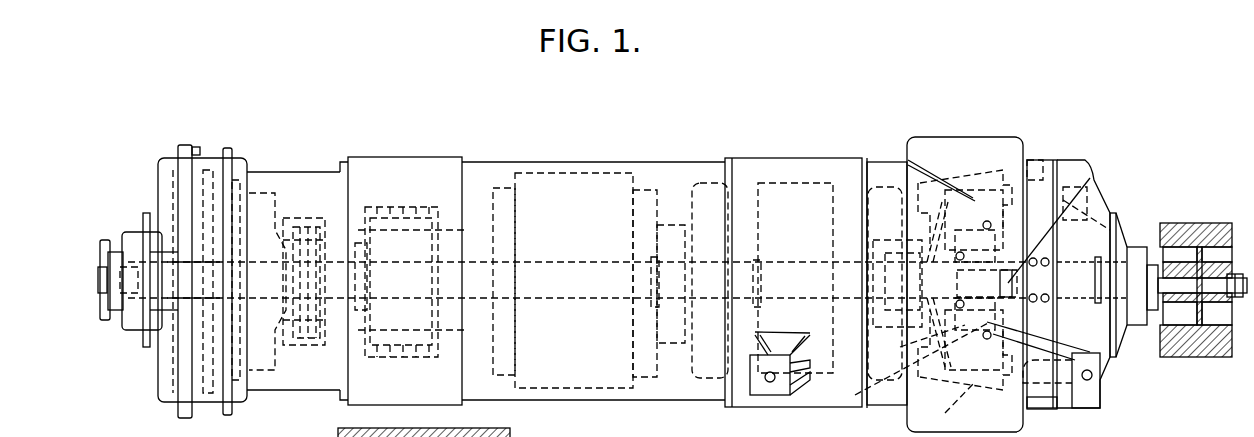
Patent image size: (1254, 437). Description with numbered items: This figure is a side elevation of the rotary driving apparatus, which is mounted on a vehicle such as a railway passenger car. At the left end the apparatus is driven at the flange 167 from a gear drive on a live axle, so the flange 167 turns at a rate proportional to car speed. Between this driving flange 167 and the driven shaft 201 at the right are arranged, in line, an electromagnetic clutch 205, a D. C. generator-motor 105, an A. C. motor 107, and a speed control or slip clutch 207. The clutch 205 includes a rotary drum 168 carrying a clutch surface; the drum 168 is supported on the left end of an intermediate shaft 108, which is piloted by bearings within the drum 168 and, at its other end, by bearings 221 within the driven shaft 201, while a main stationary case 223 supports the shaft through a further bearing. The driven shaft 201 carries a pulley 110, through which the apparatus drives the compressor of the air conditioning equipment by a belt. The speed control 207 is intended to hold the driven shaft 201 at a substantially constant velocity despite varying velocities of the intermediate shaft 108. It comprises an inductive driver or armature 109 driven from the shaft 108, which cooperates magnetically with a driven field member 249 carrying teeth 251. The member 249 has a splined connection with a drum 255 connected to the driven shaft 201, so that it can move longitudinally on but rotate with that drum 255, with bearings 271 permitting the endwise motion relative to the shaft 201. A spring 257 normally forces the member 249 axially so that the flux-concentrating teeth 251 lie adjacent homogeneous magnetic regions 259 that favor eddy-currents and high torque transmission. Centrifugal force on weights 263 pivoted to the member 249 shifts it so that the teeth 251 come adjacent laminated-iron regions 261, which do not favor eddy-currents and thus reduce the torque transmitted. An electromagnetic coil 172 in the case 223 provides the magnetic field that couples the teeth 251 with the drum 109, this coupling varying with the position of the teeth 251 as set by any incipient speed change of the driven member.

The D. C. generator-motor 105 is at (587, 160).
The A. C. motor 107 is at (780, 152).
The intermediate shaft 108 is at (537, 263).
The inductive driver or armature 109 is at (935, 240).
The pulley 110 is at (1194, 223).
The flange 167 is at (105, 240).
The drum 168 is at (173, 168).
The electromagnetic coil 172 is at (1075, 190).
The driven shaft 201 is at (1202, 287).
The electromagnetic clutch 205 is at (202, 140).
The speed control or slip clutch 207 is at (977, 135).
The bearings 221 is at (1033, 260).
The main stationary case 223 is at (367, 162).
The driven field member 249 is at (1078, 220).
The teeth 251 is at (906, 162).
The drum 255 is at (916, 343).
The spring 257 is at (1114, 338).
The homogeneous magnetic regions 259 is at (333, 432).
The laminated-iron regions 261 is at (695, 379).
The weights 263 is at (870, 393).
The bearings 271 is at (1116, 216).